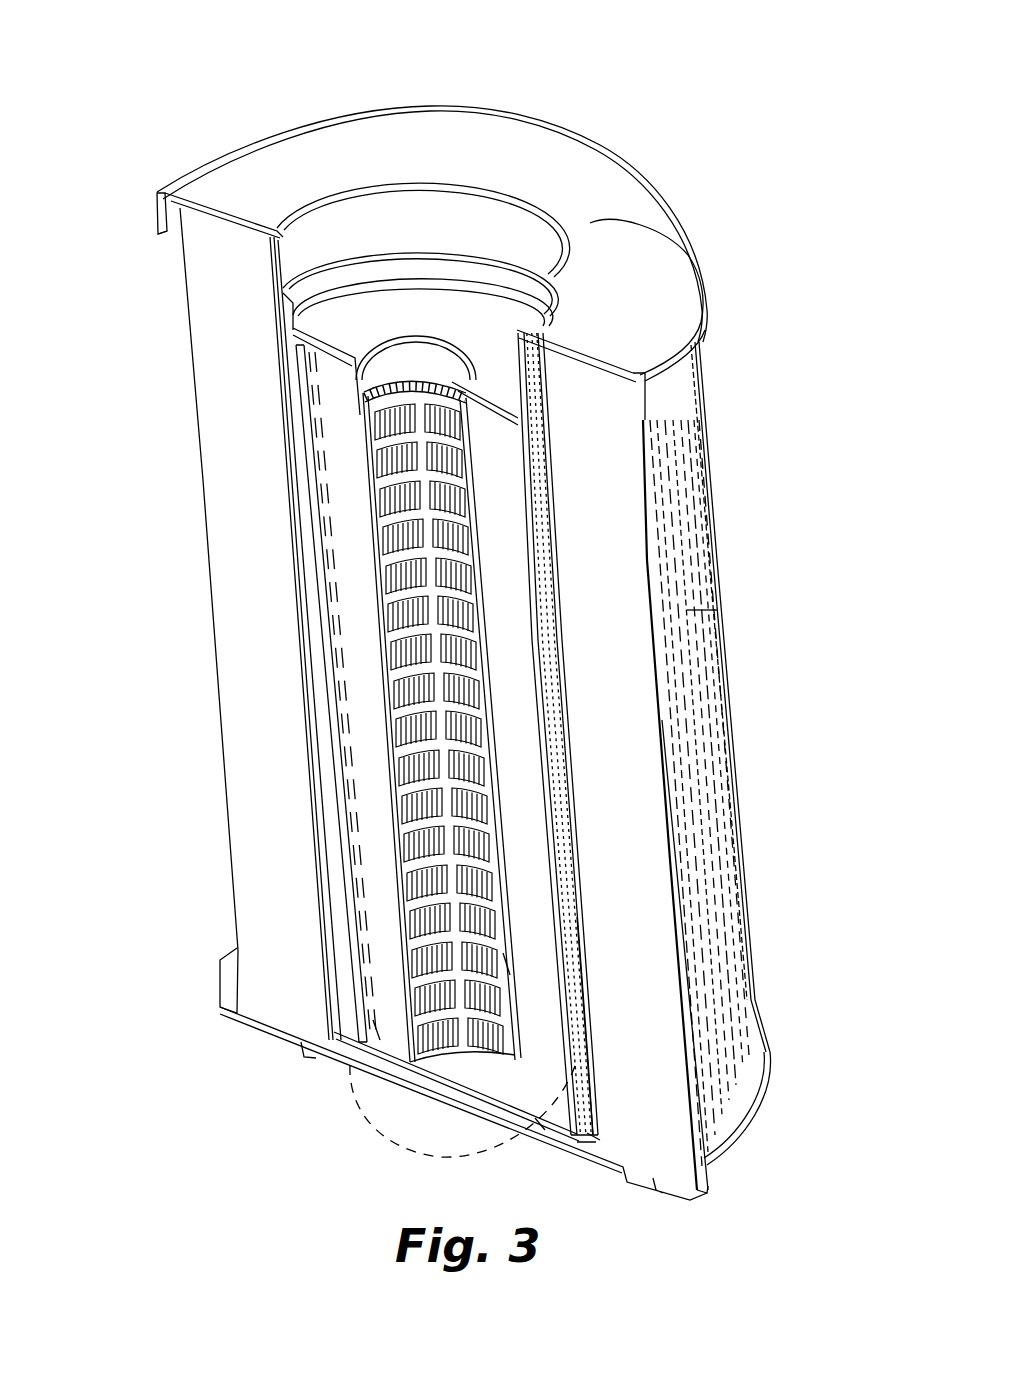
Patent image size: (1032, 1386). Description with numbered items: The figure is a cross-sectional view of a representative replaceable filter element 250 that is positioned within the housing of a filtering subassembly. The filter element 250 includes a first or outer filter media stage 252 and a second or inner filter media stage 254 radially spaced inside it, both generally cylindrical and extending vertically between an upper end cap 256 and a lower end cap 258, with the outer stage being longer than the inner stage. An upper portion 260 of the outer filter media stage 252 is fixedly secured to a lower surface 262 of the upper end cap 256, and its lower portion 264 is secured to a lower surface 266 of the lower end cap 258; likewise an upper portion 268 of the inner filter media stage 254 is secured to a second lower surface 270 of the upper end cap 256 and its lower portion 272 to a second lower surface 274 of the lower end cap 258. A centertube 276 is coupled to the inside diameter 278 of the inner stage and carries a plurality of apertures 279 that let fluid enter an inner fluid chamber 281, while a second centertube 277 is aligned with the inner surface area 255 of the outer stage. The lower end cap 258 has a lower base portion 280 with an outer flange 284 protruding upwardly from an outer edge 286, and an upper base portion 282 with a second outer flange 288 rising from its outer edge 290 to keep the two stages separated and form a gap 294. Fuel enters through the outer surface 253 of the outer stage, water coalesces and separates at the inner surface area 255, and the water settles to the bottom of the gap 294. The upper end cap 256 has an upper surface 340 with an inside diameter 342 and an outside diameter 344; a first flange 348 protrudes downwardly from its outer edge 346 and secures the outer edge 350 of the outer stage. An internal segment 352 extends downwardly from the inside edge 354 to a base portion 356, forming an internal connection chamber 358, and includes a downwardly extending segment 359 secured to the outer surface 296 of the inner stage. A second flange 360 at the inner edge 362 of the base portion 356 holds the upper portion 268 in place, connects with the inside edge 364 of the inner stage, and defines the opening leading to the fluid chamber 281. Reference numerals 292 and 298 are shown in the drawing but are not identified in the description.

The filter element 250 is at (659, 82).
The outer filter media stage 252 is at (653, 553).
The outer surface 253 is at (717, 610).
The inner filter media stage 254 is at (520, 870).
The inner surface area 255 is at (550, 530).
The upper end cap 256 is at (590, 224).
The lower end cap 258 is at (733, 1135).
The upper portion 260 is at (227, 227).
The lower surface 262 is at (157, 210).
The lower portion 264 is at (310, 1013).
The lower surface 266 is at (288, 1034).
The upper portion 268 is at (317, 397).
The second lower surface 270 is at (283, 367).
The lower portion 272 is at (393, 1133).
The second lower surface 274 is at (373, 1030).
The centertube 276 is at (503, 953).
The second centertube 277 is at (333, 807).
The inside diameter 278 is at (383, 713).
The apertures 279 is at (377, 560).
The lower base portion 280 is at (653, 1182).
The inner fluid chamber 281 is at (453, 390).
The upper base portion 282 is at (535, 1120).
The outer flange 284 is at (707, 1160).
The outer edge 286 is at (707, 1193).
The second outer flange 288 is at (587, 1135).
The outer edge 290 is at (347, 1047).
The inner floor 292 is at (533, 1110).
The gap 294 is at (557, 757).
The outer surface 296 is at (577, 917).
The seat 298 is at (503, 1007).
The upper surface 340 is at (340, 128).
The inside diameter 342 is at (480, 127).
The outside diameter 344 is at (513, 117).
The outer edge 346 is at (245, 128).
The first flange 348 is at (702, 338).
The outer edge 350 is at (637, 410).
The internal segment 352 is at (477, 240).
The inside edge 354 is at (547, 243).
The base portion 356 is at (383, 317).
The internal connection chamber 358 is at (417, 253).
The downwardly extending segment 359 is at (527, 430).
The second flange 360 is at (403, 363).
The inner edge 362 is at (367, 345).
The inside edge 364 is at (348, 380).